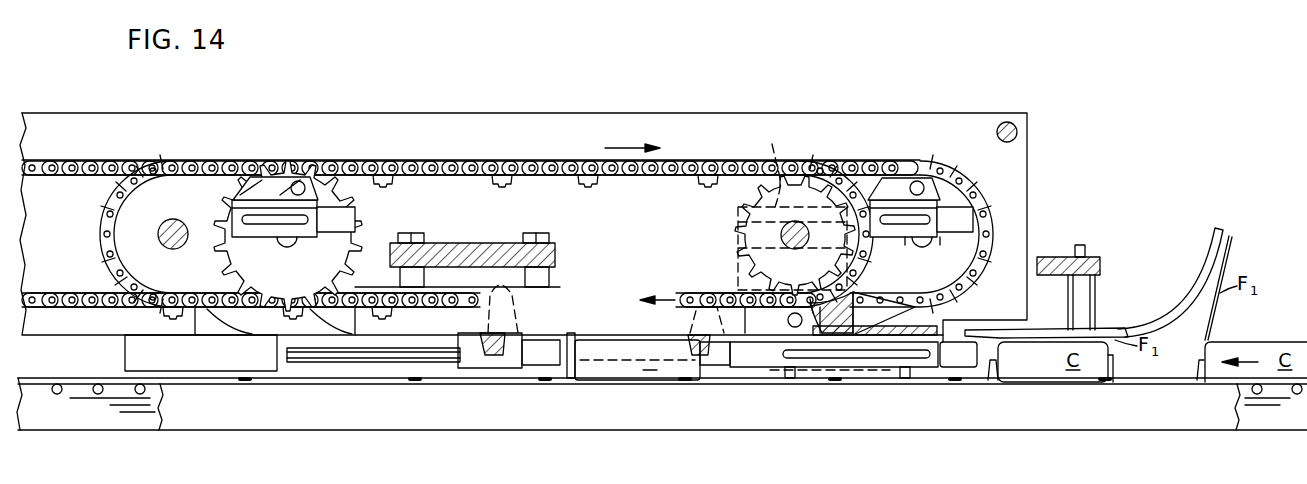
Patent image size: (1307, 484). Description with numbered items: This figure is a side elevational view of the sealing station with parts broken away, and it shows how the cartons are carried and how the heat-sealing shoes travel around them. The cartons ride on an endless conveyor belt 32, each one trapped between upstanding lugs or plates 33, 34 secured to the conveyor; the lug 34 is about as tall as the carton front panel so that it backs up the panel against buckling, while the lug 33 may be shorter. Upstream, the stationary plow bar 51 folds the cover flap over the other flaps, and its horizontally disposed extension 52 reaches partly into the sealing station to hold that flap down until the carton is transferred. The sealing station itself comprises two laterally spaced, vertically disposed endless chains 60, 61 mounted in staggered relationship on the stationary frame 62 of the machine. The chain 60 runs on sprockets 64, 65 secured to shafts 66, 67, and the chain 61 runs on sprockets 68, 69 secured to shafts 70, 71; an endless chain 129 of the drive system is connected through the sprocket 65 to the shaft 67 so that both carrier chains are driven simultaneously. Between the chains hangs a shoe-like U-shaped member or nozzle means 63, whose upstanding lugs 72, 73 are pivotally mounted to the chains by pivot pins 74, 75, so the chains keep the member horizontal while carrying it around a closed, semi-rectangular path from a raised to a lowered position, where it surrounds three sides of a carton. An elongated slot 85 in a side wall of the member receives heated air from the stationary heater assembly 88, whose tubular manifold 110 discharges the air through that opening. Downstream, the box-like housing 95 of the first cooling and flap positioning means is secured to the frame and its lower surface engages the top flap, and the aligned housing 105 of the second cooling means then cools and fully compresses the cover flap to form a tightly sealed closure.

The endless chain 129 is at (55, 160).
The endless chain 61 is at (422, 160).
The lug 72 is at (924, 160).
The endless chain 60 is at (240, 178).
The U-shaped member or nozzle means 63 is at (320, 197).
The sprocket 65 is at (327, 276).
The shaft 67 is at (287, 242).
The sprocket 69 is at (182, 209).
The shaft 71 is at (165, 247).
The housing 105 is at (97, 333).
The lug 73 is at (762, 322).
The pivot pin 75 is at (797, 160).
The pivot pin 74 is at (915, 181).
The shaft 70 is at (784, 243).
The sprocket 68 is at (822, 273).
The sprocket 64 is at (907, 273).
The shaft 66 is at (922, 247).
The box-like housing 95 is at (612, 313).
The stationary heater assembly 88 is at (277, 380).
The tubular manifold 110 is at (328, 366).
The endless conveyor belt 32 is at (403, 386).
The stationary frame 62 is at (628, 416).
The elongated opening or slot 85 is at (843, 358).
The lug or plate 34 is at (990, 381).
The lug or plate 33 is at (1114, 366).
The horizontally disposed extension 52 is at (1028, 330).
The stationary plow means or bar 51 is at (1207, 272).